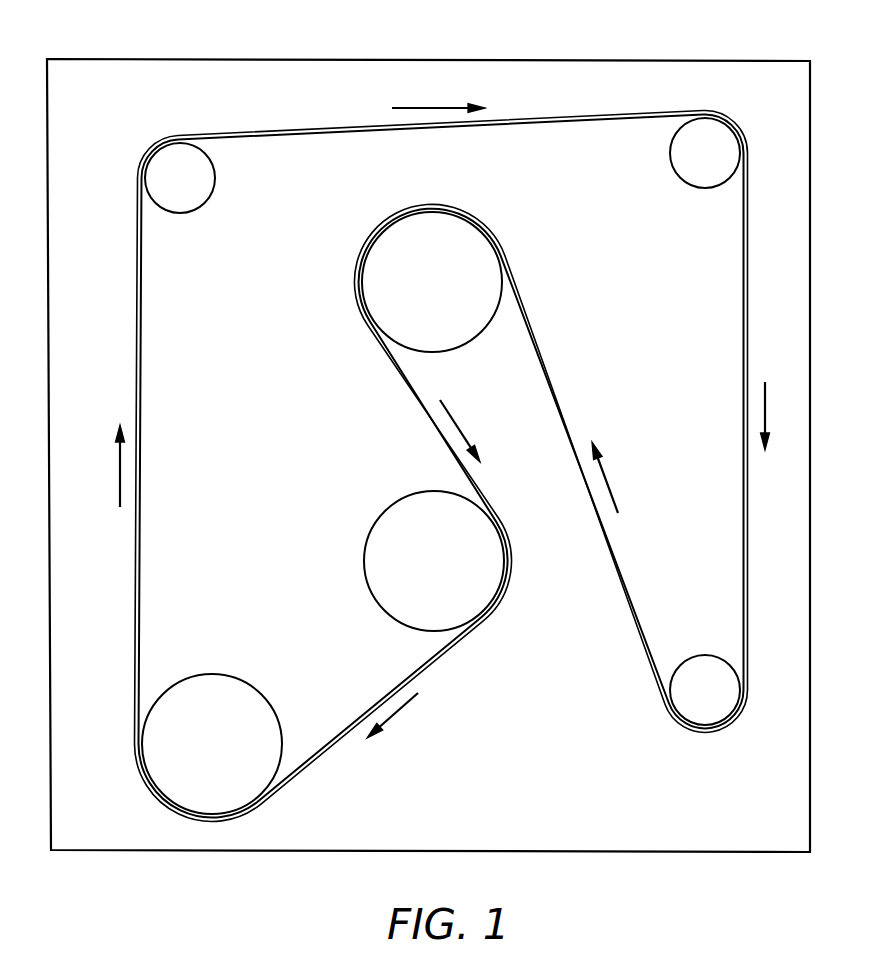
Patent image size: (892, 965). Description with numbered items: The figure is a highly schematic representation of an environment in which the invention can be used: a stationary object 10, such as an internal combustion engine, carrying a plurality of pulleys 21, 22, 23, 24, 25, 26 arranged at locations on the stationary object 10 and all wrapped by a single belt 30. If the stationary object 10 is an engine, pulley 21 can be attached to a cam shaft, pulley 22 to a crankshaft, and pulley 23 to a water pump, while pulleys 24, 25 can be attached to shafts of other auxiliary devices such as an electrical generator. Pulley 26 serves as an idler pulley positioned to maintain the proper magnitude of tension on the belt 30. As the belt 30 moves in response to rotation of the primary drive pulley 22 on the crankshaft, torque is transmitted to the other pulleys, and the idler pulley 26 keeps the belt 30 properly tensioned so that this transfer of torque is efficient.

The stationary object 10 is at (172, 72).
The pulley 21 is at (420, 294).
The pulley 22 is at (422, 574).
The pulley 23 is at (200, 756).
The pulley 24 is at (168, 190).
The pulley 25 is at (693, 702).
The idler pulley 26 is at (693, 166).
The belt 30 is at (144, 329).